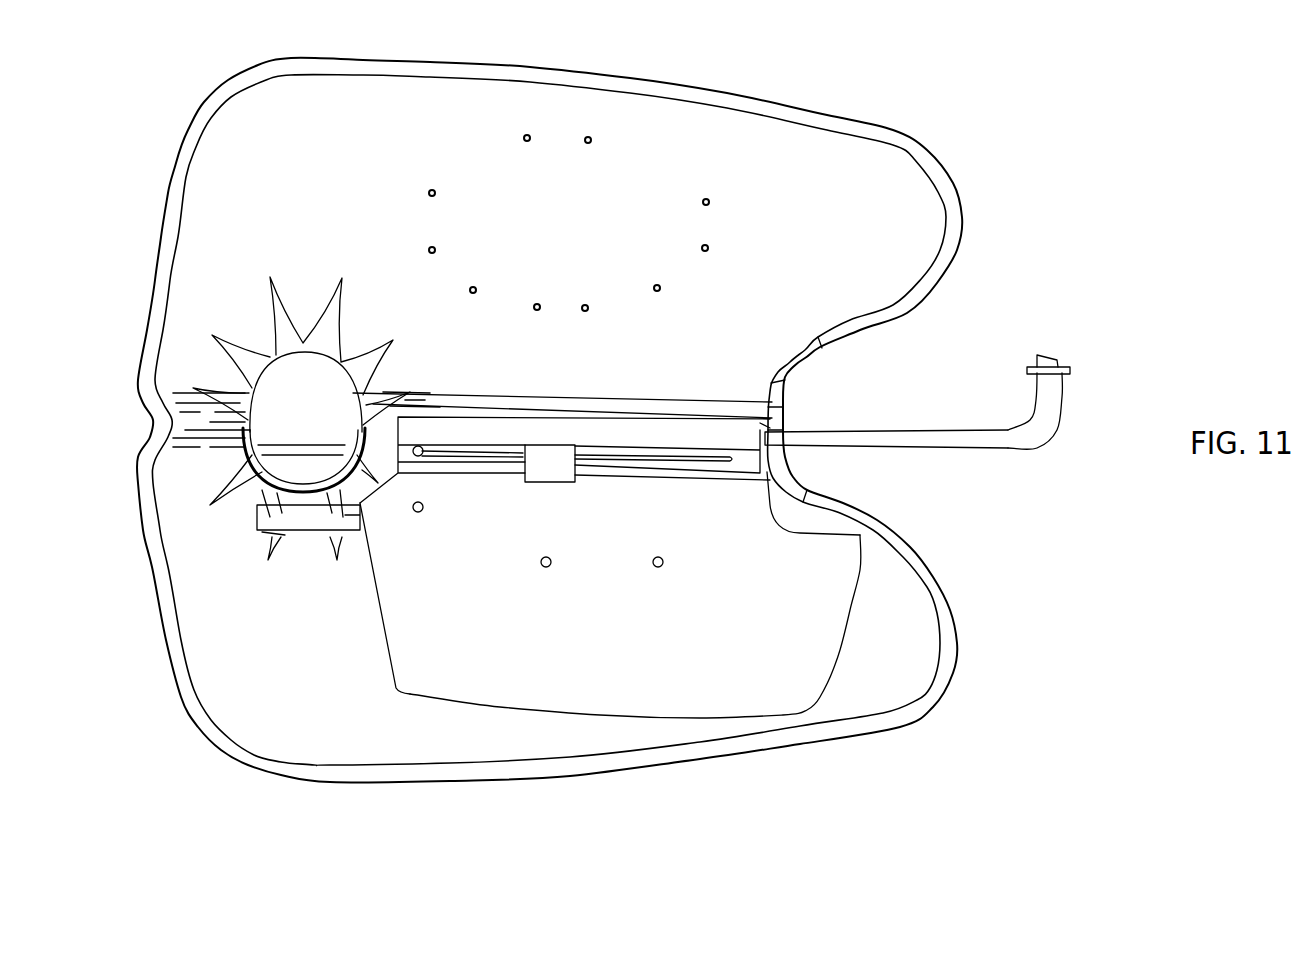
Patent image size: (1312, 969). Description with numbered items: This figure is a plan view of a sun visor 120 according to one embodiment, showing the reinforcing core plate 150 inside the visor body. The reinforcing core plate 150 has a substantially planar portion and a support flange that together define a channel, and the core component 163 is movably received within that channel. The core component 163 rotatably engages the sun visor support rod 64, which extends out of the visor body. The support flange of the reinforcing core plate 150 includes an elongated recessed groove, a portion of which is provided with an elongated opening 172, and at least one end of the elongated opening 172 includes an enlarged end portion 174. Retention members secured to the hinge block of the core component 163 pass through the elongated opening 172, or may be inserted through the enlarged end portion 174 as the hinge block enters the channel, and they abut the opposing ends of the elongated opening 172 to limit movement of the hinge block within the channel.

The sun visor 120 is at (1060, 609).
The reinforcing core plate 150 is at (396, 691).
The core component 163 is at (554, 483).
The elongated opening 172 is at (653, 456).
The enlarged end portion 174 is at (421, 446).
The sun visor support rod 64 is at (940, 449).